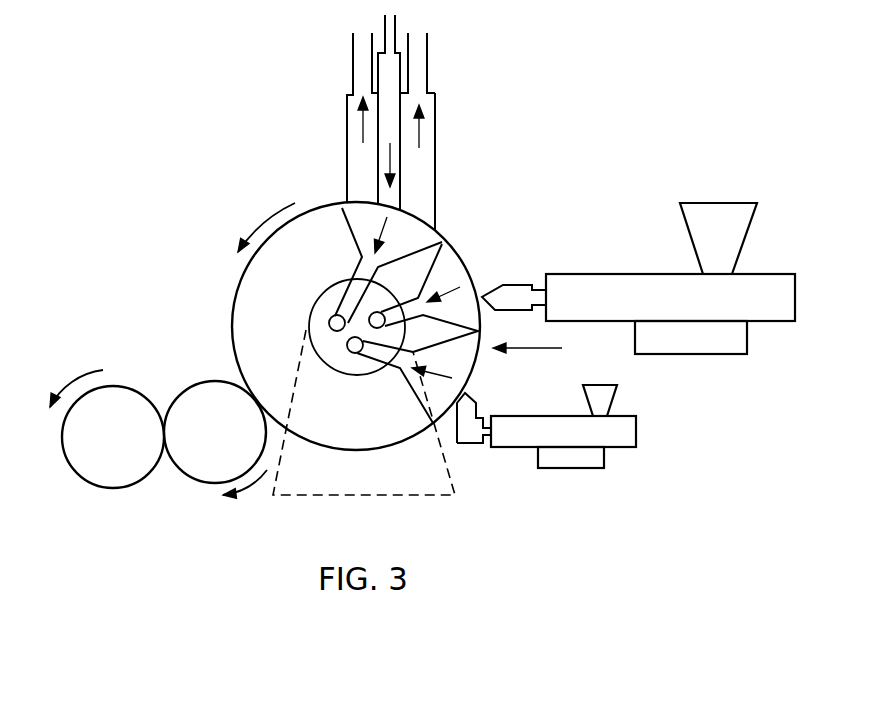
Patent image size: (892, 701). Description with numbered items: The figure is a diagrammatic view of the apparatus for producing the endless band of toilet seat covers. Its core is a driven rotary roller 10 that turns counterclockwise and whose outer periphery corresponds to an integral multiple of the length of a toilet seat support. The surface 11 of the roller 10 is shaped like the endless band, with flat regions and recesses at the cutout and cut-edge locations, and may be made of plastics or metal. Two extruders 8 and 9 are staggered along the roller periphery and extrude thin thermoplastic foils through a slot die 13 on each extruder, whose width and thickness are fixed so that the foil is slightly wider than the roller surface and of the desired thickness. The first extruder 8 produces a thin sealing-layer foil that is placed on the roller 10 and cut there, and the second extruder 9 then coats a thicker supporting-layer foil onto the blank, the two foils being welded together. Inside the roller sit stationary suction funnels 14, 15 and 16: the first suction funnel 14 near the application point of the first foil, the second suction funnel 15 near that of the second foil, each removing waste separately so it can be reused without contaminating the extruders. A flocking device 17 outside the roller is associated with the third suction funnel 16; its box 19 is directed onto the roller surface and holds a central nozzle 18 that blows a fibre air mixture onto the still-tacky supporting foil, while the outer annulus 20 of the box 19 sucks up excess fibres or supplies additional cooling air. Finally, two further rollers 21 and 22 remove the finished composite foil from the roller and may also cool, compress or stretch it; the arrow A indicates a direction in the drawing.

The extruder 8 is at (636, 432).
The extruder 9 is at (688, 355).
The rotary roller 10 is at (248, 327).
The surface of roller 11 is at (245, 272).
The slot die 13 is at (482, 292).
The first suction funnel 14 is at (458, 370).
The second suction funnel 15 is at (455, 282).
The third suction funnel 16 is at (412, 240).
The flocking device 17 is at (440, 136).
The nozzle 18 is at (397, 153).
The box 19 is at (437, 185).
The outer annulus 20 is at (362, 162).
The roller 21 is at (200, 483).
The roller 22 is at (93, 488).
The direction arrow A is at (537, 350).